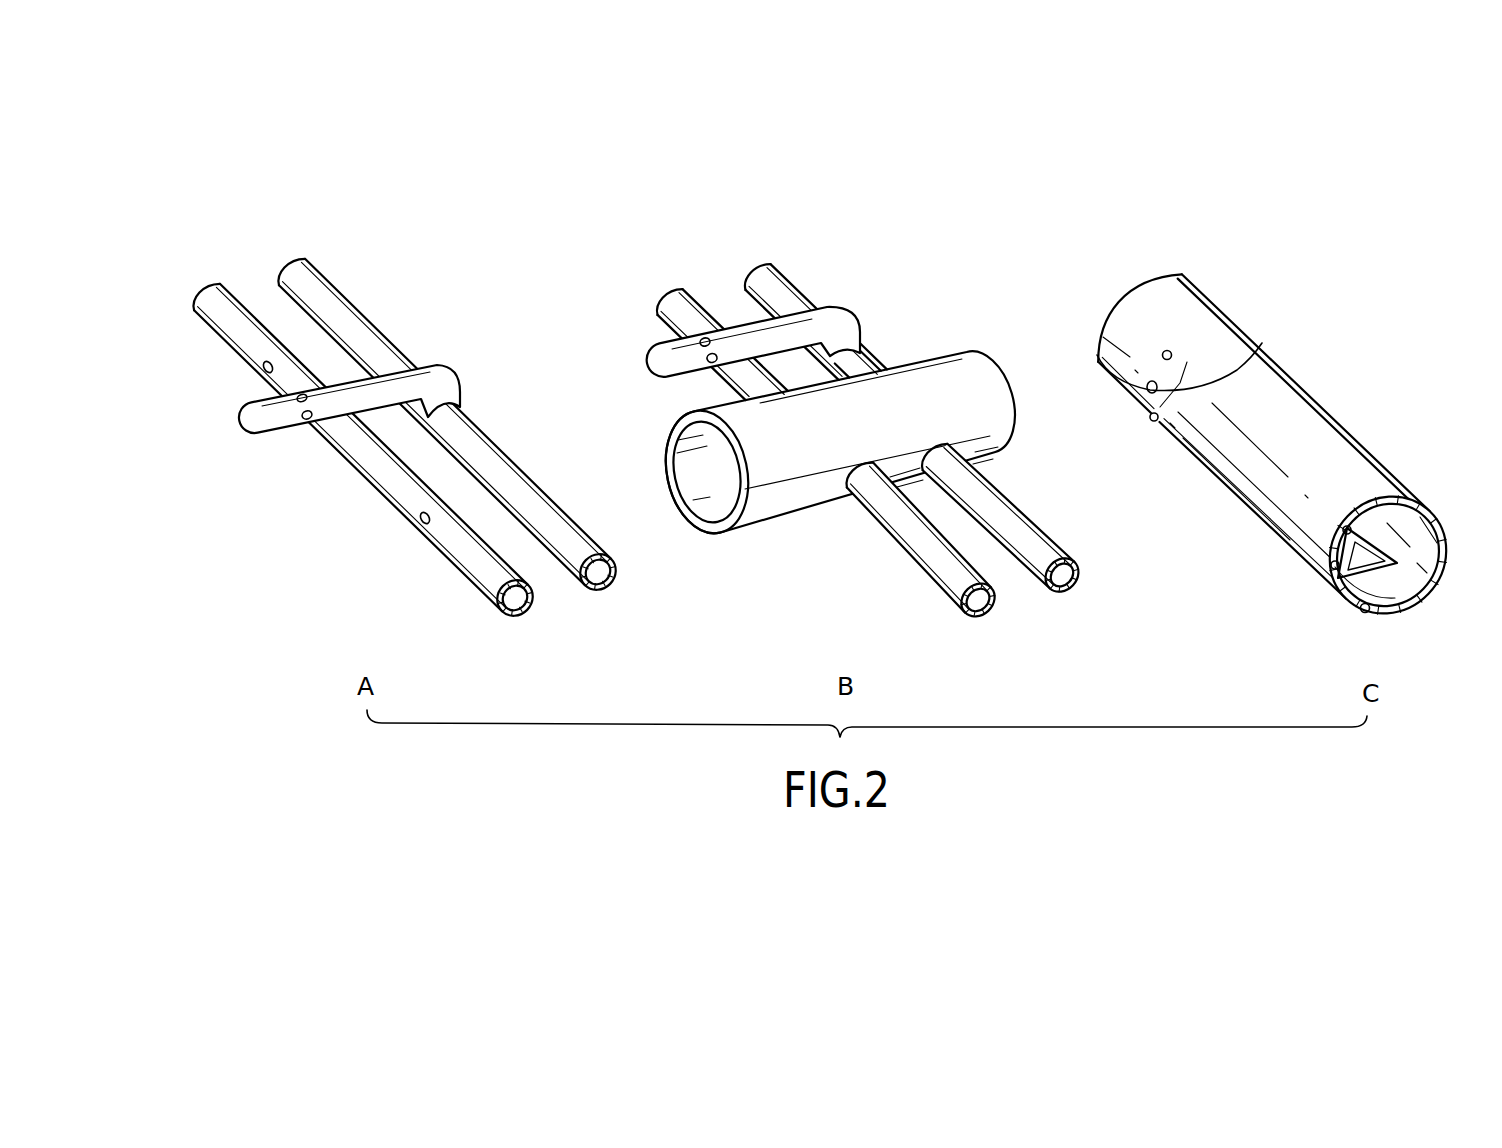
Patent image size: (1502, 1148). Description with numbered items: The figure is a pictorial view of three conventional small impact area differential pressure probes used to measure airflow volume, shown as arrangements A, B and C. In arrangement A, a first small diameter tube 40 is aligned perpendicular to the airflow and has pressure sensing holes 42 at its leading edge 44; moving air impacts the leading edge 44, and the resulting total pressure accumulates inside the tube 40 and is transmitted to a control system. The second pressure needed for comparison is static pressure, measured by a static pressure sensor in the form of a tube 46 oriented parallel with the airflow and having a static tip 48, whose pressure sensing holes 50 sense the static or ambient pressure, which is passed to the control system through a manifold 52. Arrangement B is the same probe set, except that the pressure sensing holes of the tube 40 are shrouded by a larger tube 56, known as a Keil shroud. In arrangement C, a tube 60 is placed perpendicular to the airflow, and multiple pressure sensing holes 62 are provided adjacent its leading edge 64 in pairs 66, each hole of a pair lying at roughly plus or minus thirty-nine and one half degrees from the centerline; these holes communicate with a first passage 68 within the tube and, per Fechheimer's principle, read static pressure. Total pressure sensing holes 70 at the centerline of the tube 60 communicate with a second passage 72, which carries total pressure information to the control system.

The first small diameter tube 40 is at (573, 445).
The pressure sensing holes 42 is at (262, 376).
The leading edge 44 is at (373, 490).
The tube 46 is at (248, 431).
The static tip 48 is at (516, 377).
The pressure sensing holes 50 is at (298, 406).
The manifold 52 is at (553, 503).
The larger tube 56 is at (668, 440).
The tube 60 is at (1271, 466).
The pressure sensing holes 62 is at (1167, 350).
The leading edge 64 is at (1235, 498).
The pairs 66 is at (1250, 358).
The first passage 68 is at (1432, 514).
The total pressure sensing holes 70 is at (1152, 381).
The second passage 72 is at (1408, 607).